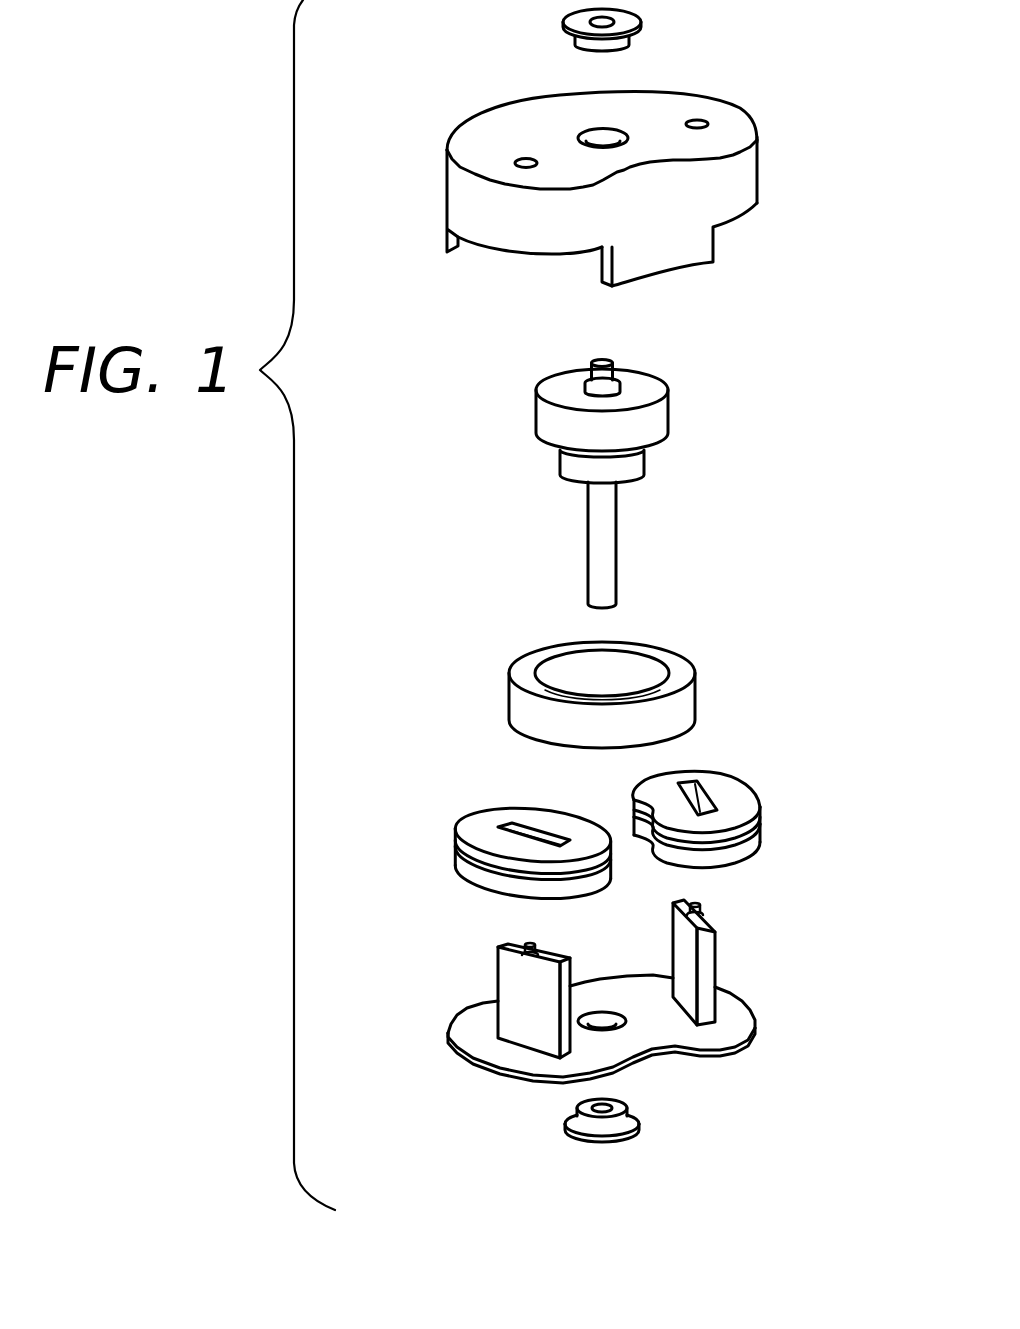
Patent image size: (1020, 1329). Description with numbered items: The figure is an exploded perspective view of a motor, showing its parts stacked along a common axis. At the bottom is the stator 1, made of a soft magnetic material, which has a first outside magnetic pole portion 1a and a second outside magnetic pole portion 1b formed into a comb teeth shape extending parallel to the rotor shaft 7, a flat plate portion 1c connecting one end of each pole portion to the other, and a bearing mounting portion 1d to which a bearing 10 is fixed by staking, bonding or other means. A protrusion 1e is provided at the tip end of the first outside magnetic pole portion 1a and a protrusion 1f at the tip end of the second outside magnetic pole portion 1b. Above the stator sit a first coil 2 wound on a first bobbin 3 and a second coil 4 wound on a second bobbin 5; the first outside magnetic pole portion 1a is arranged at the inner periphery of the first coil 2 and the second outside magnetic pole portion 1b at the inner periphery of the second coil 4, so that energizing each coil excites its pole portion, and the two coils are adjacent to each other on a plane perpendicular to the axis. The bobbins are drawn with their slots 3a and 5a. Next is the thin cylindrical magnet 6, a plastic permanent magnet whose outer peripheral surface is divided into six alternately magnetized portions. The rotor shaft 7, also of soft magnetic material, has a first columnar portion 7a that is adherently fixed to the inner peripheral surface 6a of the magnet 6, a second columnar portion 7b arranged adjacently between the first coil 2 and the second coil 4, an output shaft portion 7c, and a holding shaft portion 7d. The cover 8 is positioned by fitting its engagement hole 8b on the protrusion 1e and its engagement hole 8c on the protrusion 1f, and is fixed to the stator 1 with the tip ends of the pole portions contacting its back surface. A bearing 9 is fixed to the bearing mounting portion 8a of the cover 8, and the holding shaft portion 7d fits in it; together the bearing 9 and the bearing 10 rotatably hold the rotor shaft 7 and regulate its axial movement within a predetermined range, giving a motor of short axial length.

The stator 1 is at (620, 988).
The first outside magnetic pole portion 1a is at (520, 987).
The second outside magnetic pole portion 1b is at (717, 945).
The flat plate portion 1c is at (693, 1057).
The bearing mounting portion 1d is at (598, 1015).
The protrusion 1e is at (527, 943).
The protrusion 1f is at (705, 907).
The first coil 2 is at (470, 873).
The first bobbin 3 is at (504, 813).
The slot of first plate 3a is at (528, 826).
The second coil 4 is at (748, 853).
The second bobbin 5 is at (729, 793).
The slot of second plate 5a is at (713, 783).
The magnet 6 is at (622, 666).
The inner peripheral surface 6a is at (555, 673).
The rotor shaft 7 is at (600, 475).
The first columnar portion 7a is at (669, 402).
The second columnar portion 7b is at (646, 460).
The output shaft portion 7c is at (616, 543).
The holding shaft portion 7d is at (587, 377).
The cover 8 is at (623, 171).
The bearing mounting portion 8a is at (587, 132).
The engagement hole 8b is at (520, 160).
The engagement hole 8c is at (700, 123).
The bearing 9 is at (641, 27).
The bearing 10 is at (642, 1122).